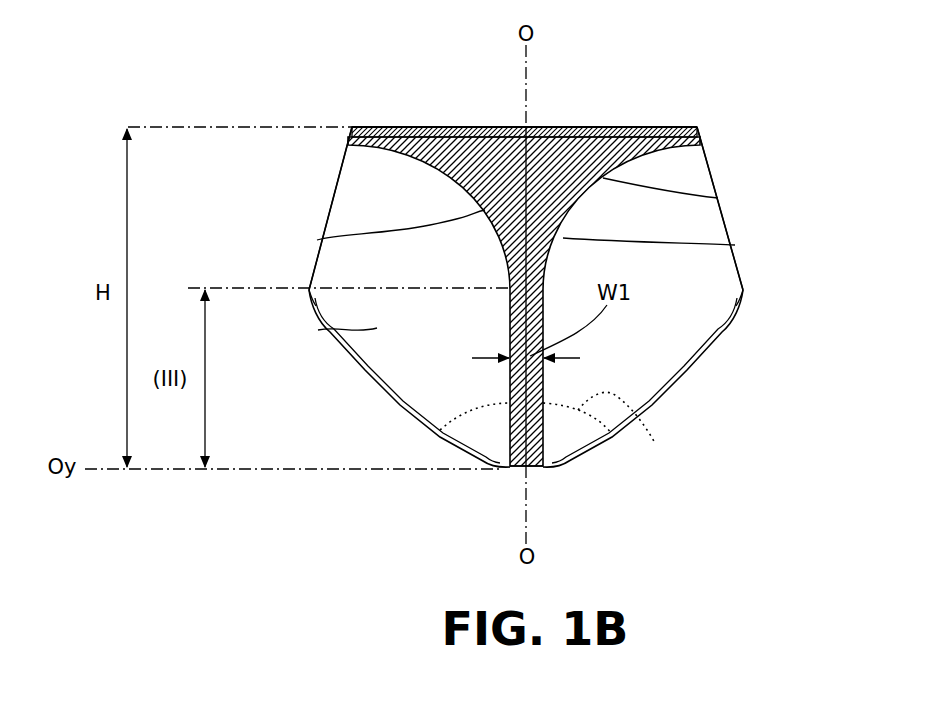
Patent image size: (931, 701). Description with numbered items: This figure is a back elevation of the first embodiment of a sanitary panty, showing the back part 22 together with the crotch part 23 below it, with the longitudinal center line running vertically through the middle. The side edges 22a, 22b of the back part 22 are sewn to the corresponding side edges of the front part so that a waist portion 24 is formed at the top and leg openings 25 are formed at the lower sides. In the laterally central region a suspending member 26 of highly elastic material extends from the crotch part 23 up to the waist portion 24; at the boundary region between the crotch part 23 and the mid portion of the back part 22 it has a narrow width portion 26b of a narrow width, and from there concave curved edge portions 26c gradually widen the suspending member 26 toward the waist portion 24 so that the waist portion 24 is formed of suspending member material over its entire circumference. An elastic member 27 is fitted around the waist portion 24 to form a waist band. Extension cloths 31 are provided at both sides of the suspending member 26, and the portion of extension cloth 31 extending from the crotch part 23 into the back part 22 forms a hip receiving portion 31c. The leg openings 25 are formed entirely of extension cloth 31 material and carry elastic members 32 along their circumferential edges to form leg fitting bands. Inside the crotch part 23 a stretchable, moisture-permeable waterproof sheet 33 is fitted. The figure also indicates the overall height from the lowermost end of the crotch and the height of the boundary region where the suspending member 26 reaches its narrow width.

The back part 22 is at (630, 337).
The side edge of the back part 22a is at (715, 172).
The side edge of the back part 22b is at (332, 180).
The crotch part 23 is at (499, 472).
The waist portion 24 is at (596, 118).
The leg openings 25 is at (346, 362).
The suspending member 26 is at (445, 190).
The narrow width portion 26b is at (735, 245).
The concave curved edge portions 26c is at (317, 240).
The elastic member 27 is at (487, 127).
The extension cloths 31 is at (754, 292).
The hip receiving portion 31c is at (318, 330).
The elastic members 32 is at (397, 407).
The waterproof sheet 33 is at (557, 431).